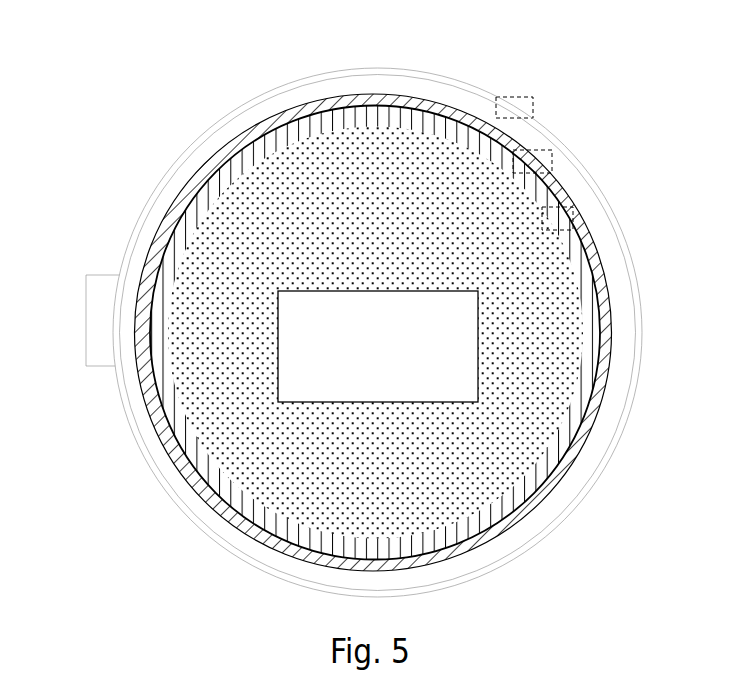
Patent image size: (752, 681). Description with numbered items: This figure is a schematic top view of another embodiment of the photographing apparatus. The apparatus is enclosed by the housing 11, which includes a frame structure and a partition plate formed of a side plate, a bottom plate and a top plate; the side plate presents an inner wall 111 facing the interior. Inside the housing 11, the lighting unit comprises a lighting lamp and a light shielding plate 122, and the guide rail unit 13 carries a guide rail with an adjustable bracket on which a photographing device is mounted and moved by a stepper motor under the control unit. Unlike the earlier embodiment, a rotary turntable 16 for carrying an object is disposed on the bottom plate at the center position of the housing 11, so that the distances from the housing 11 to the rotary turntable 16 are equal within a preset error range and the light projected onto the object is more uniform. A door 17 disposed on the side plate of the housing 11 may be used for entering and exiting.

The housing 11 is at (512, 113).
The inner wall 111 is at (448, 80).
The light shielding plate 122 is at (533, 165).
The guide rail unit 13 is at (555, 213).
The rotary turntable 16 is at (462, 342).
The door 17 is at (100, 285).